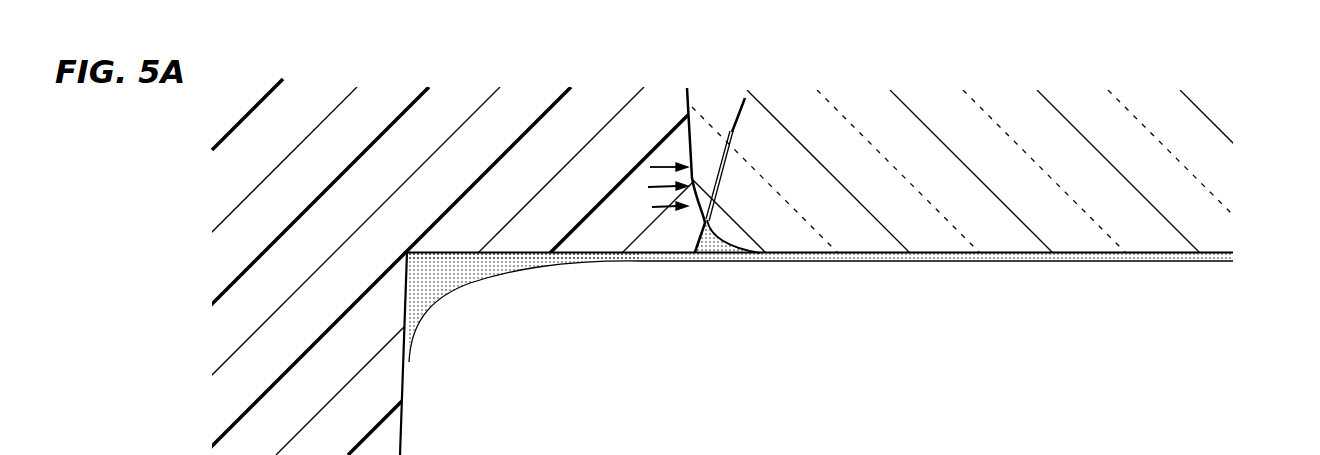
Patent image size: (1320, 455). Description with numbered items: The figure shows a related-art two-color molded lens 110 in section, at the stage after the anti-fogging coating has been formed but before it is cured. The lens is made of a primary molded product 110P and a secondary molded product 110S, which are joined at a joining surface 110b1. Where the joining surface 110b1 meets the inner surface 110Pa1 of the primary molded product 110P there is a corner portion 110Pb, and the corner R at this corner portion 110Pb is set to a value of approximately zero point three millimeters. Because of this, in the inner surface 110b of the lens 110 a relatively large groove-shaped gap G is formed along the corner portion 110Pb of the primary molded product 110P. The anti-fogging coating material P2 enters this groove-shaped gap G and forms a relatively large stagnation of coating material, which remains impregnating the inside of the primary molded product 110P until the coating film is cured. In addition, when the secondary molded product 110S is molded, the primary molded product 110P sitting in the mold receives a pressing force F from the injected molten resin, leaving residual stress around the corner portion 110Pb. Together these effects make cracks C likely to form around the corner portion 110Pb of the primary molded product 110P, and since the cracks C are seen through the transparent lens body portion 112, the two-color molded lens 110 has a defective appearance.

The two-color molded lens 110 is at (1158, 306).
The secondary molded product 110S is at (412, 423).
The anti-fogging coating material P2 is at (641, 266).
The primary molded product 110P is at (1034, 266).
The inner surface 110b is at (927, 253).
The transparent lens body portion 112 is at (1150, 180).
The joining surface 110b1 is at (687, 143).
The inner surface of primary molded product 110Pa1 is at (799, 253).
The cracks C is at (728, 150).
The corner portion 110Pb is at (733, 232).
The corner R is at (726, 221).
The groove-shaped gap G is at (715, 243).
The pressing force F is at (660, 186).